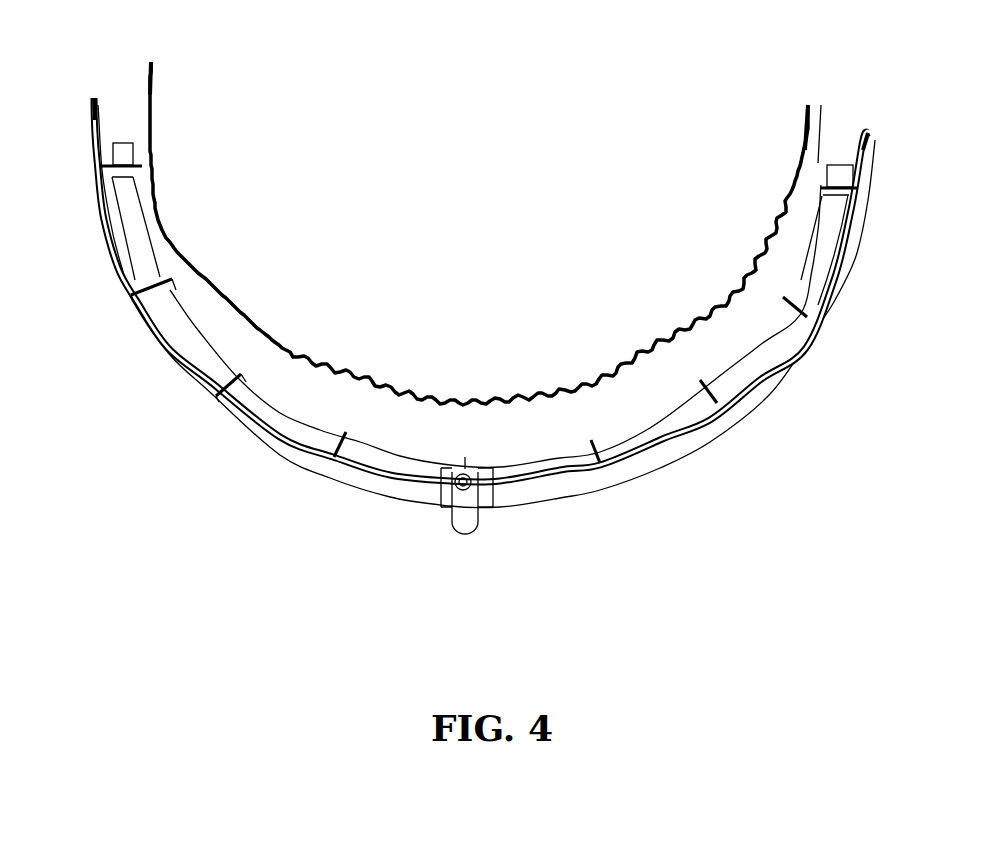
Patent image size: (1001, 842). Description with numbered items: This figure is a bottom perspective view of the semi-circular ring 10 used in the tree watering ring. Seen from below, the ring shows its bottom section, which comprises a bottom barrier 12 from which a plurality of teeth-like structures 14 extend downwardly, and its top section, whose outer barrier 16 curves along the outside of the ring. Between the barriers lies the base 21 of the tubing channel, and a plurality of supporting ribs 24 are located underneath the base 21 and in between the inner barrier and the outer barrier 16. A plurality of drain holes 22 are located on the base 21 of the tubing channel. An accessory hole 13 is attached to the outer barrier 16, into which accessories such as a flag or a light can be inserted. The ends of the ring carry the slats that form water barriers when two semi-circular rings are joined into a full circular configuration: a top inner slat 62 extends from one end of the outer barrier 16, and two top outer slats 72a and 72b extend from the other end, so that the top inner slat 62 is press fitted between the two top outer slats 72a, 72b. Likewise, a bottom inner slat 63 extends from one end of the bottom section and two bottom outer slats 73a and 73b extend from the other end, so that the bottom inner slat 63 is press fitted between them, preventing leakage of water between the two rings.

The semi-circular ring 10 is at (725, 524).
The bottom barrier 12 is at (479, 233).
The accessory hole 13 is at (463, 510).
The teeth-like structures 14 is at (607, 400).
The outer barrier 16 is at (233, 415).
The base of the tubing channel 21 is at (123, 143).
The drain holes 22 is at (368, 457).
The supporting ribs 24 is at (224, 324).
The top inner slat 62 is at (100, 113).
The bottom inner slat 63 is at (152, 92).
The top outer slat 72a is at (853, 162).
The top outer slat 72b is at (872, 157).
The bottom outer slat 73a is at (806, 108).
The bottom outer slat 73b is at (820, 120).